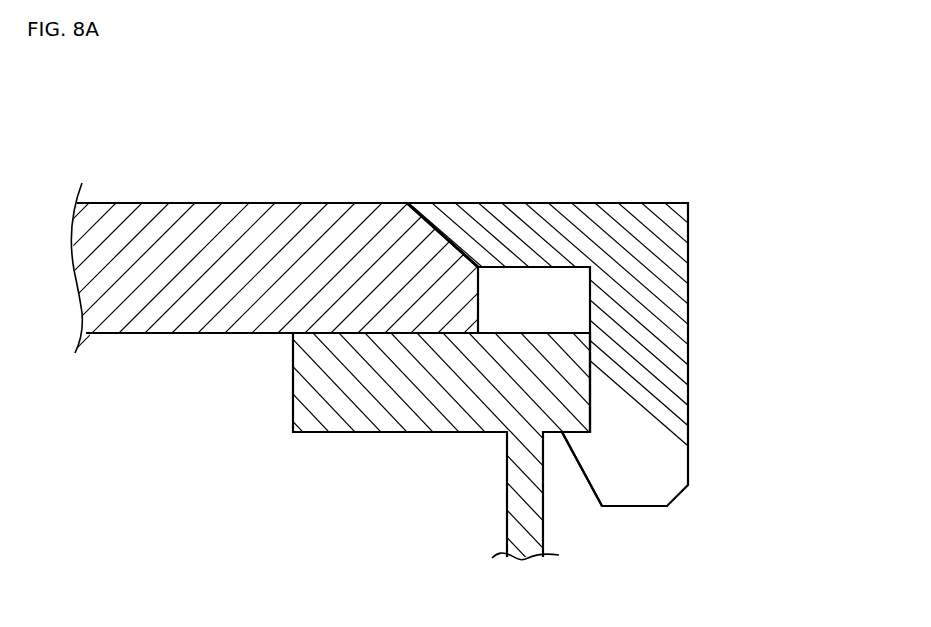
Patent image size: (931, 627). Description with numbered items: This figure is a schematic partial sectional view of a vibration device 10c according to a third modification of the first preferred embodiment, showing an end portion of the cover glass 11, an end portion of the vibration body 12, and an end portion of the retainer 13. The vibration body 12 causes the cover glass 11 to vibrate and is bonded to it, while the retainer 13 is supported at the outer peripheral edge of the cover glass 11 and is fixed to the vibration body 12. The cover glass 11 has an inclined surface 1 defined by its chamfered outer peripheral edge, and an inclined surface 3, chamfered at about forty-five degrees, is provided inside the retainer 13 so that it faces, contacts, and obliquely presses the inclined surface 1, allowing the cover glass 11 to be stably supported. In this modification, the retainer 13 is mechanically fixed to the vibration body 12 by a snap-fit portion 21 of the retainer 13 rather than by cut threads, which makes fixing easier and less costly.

The vibration device 10c is at (591, 77).
The cover glass 11 is at (177, 228).
The vibration body 12 is at (409, 423).
The retainer 13 is at (672, 250).
The inclined surface 1 is at (446, 226).
The inclined surface 3 is at (437, 241).
The snap-fit portion 21 is at (577, 481).